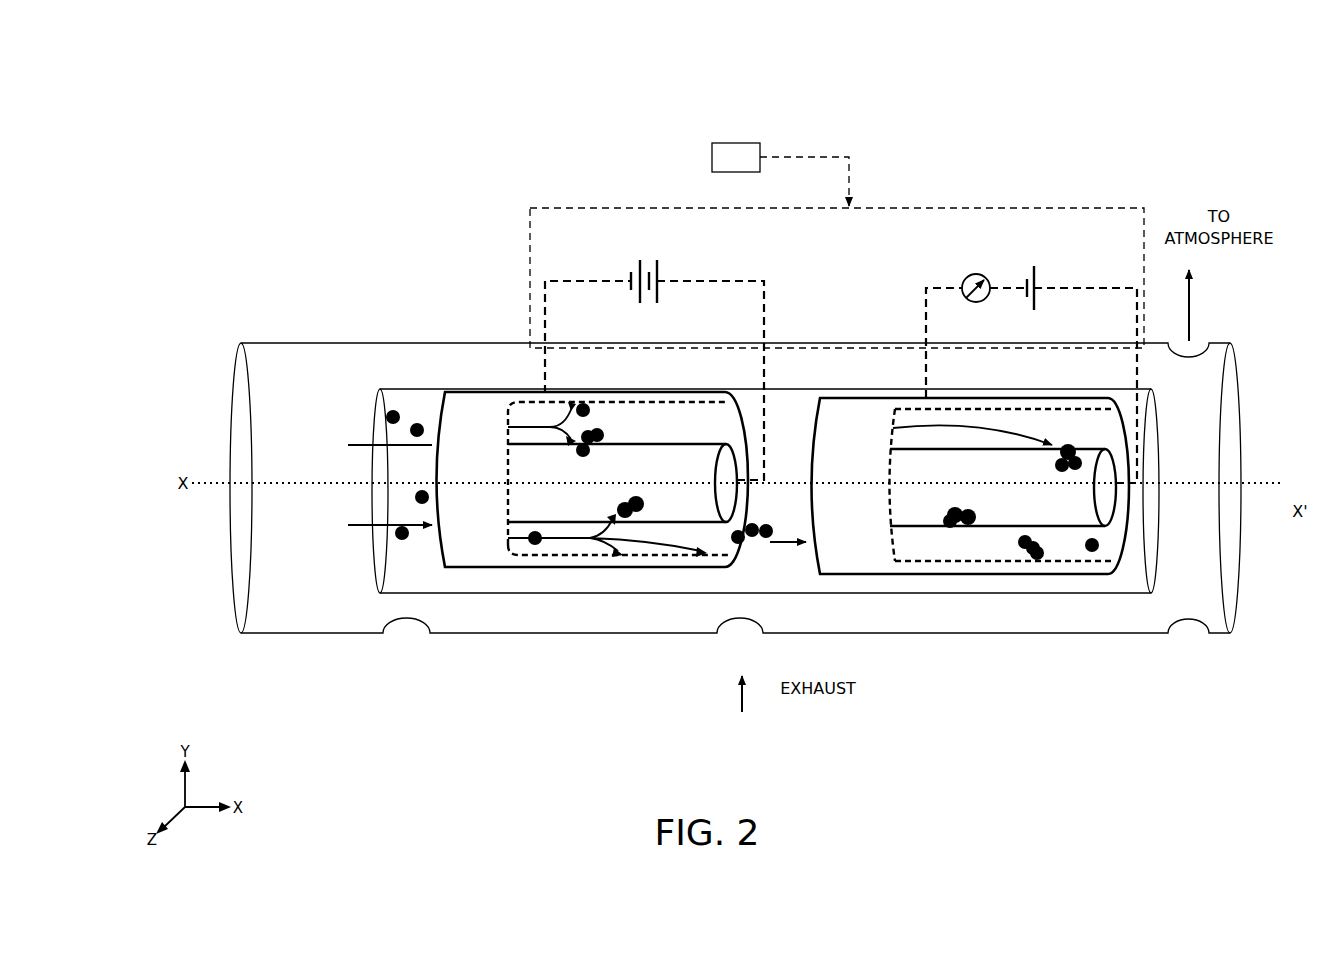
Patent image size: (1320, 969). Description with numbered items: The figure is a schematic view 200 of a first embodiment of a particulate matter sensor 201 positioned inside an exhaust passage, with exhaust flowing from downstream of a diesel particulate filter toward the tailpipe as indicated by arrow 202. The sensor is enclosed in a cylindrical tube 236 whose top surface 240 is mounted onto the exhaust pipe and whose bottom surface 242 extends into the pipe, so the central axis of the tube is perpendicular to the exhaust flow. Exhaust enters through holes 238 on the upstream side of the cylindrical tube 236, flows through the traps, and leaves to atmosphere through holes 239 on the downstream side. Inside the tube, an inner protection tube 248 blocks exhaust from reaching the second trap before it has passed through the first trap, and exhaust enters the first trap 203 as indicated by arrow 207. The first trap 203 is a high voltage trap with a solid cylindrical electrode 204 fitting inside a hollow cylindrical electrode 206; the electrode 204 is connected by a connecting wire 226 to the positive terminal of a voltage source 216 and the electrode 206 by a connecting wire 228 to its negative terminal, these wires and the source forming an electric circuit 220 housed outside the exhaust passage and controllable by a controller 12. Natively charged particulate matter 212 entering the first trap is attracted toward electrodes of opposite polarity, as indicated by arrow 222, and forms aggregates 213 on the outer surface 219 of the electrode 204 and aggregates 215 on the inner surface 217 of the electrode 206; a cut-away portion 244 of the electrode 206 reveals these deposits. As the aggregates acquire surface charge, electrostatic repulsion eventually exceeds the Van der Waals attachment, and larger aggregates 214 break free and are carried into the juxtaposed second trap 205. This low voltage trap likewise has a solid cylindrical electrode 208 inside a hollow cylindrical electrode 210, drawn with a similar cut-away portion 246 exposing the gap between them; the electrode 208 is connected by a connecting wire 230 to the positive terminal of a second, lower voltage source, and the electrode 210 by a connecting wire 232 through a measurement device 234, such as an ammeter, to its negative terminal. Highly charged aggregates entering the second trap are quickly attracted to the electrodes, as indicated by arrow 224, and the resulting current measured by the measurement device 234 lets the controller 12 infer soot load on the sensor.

The controller 12 is at (780, 174).
The schematic view 200 is at (1201, 152).
The particulate matter sensor 201 is at (267, 242).
The arrow indicating exhaust flow 202 is at (740, 699).
The first trap 203 is at (492, 580).
The cylindrical electrode 204 is at (740, 497).
The second trap 205 is at (906, 580).
The cylindrical electrode 206 is at (705, 568).
The arrow indicating exhaust entering the first trap 207 is at (362, 445).
The cylindrical electrode 208 is at (1097, 508).
The cylindrical electrode 210 is at (1038, 563).
The particulate matter 212 is at (405, 539).
The aggregate 213 is at (640, 503).
The aggregate 214 is at (760, 539).
The aggregate 215 is at (598, 433).
The voltage source 216 is at (641, 254).
The inner surface 217 is at (645, 403).
The outer surface 219 is at (687, 438).
The electric circuit 220 is at (527, 206).
The arrow indicating electrostatic attraction 222 is at (567, 540).
The arrow indicating attraction in the second trap 224 is at (975, 427).
The connecting wire 226 is at (764, 377).
The connecting wire 228 is at (545, 311).
The connecting wire 230 is at (1137, 387).
The connecting wire 232 is at (926, 321).
The measurement device 234 is at (966, 277).
The cylindrical tube 236 is at (308, 342).
The holes 238 is at (407, 621).
The holes 239 is at (1205, 351).
The top surface 240 is at (231, 424).
The bottom surface 242 is at (1240, 546).
The cut-away portion 244 is at (505, 458).
The gap in second housing 246 is at (888, 456).
The inner protection tube 248 is at (820, 397).